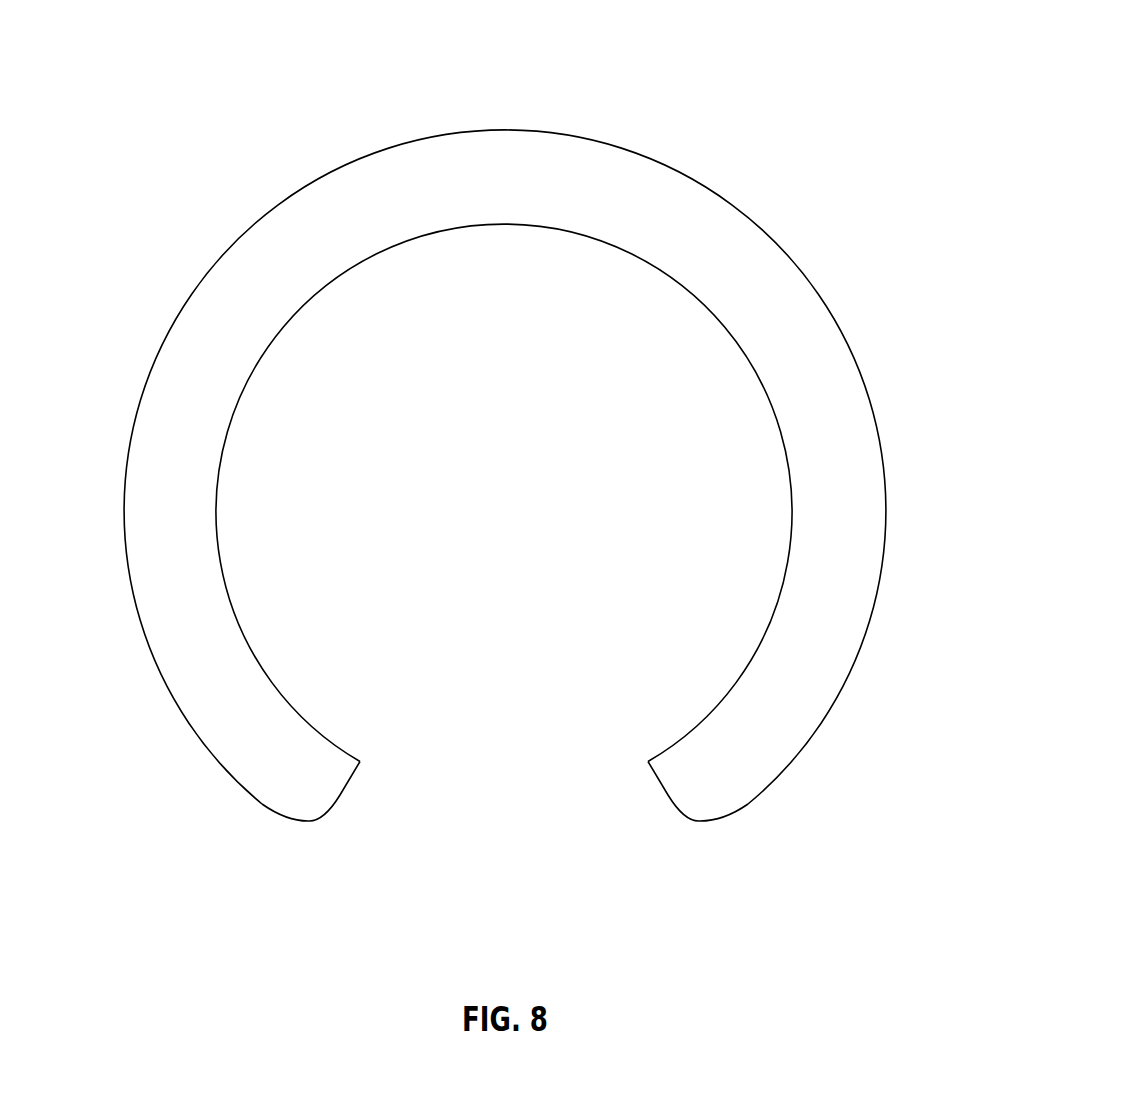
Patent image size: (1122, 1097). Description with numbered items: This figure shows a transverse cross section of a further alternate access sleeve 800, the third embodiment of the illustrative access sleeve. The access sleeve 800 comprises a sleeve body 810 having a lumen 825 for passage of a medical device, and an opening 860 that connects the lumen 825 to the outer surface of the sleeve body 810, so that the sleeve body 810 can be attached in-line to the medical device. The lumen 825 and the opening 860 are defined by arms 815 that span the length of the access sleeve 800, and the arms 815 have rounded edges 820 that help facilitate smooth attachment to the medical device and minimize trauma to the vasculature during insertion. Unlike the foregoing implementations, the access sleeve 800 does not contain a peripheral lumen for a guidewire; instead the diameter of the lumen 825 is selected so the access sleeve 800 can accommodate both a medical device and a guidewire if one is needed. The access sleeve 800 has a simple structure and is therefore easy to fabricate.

The access sleeve 800 is at (635, 122).
The sleeve body 810 is at (217, 283).
The arms 815 is at (133, 527).
The rounded edges 820 is at (304, 800).
The lumen 825 is at (333, 450).
The opening 860 is at (507, 813).